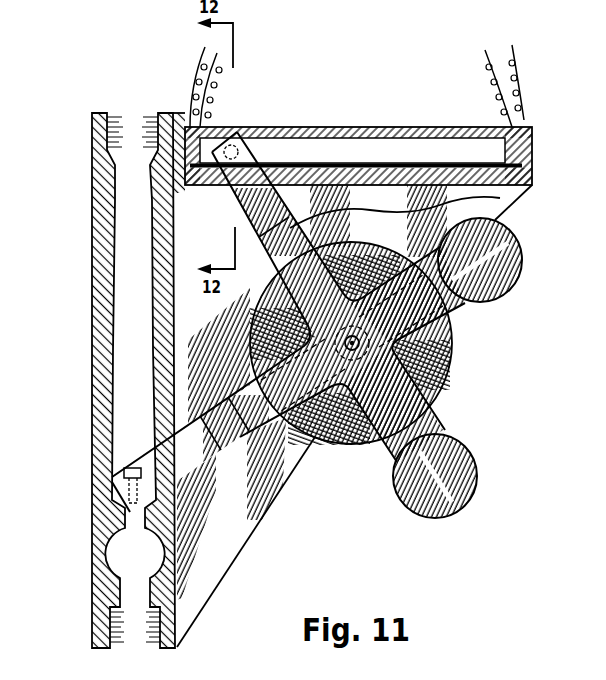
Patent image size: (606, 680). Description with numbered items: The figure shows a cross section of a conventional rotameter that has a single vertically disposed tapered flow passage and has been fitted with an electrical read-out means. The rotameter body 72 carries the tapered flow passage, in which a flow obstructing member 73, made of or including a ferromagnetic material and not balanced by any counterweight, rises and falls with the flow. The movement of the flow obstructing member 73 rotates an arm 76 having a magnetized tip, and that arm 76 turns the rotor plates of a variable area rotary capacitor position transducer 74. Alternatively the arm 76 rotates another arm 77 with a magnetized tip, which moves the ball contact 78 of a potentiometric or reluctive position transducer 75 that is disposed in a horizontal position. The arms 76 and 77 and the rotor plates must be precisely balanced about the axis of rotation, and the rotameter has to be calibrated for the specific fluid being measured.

The tubular cylinder 72 is at (118, 344).
The flow obstructing member 73 is at (122, 467).
The variable area rotary capacitor position transducer 74 is at (447, 380).
The potentiometric or reluctive position transducer 75 is at (377, 152).
The arm with magnetized tip 76 is at (262, 452).
The arm with magnetized tip 77 is at (500, 198).
The ball contact 78 is at (282, 127).